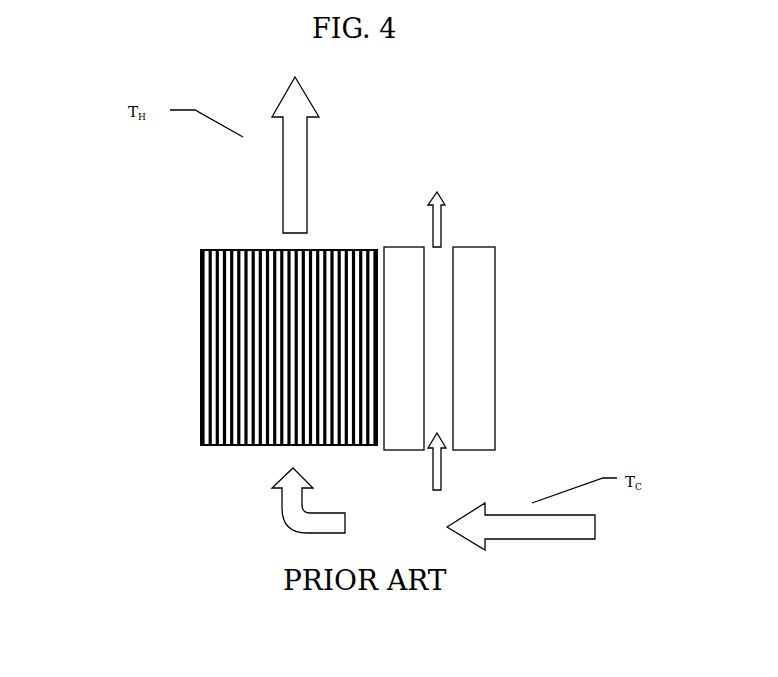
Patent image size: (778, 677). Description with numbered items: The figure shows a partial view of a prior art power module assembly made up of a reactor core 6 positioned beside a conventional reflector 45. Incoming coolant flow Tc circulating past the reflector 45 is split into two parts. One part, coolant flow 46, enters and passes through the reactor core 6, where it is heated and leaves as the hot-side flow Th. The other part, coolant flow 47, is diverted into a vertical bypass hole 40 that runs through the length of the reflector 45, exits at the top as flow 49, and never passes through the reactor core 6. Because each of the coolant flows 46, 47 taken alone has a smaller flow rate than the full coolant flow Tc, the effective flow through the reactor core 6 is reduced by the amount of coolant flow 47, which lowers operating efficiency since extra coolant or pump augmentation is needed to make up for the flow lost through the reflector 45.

The reactor core 6 is at (182, 312).
The vertical bypass hole 40 is at (463, 341).
The conventional reflector 45 is at (473, 332).
The coolant flow 46 is at (272, 508).
The coolant flow 47 is at (423, 465).
The fluid flow outlet 49 is at (423, 217).